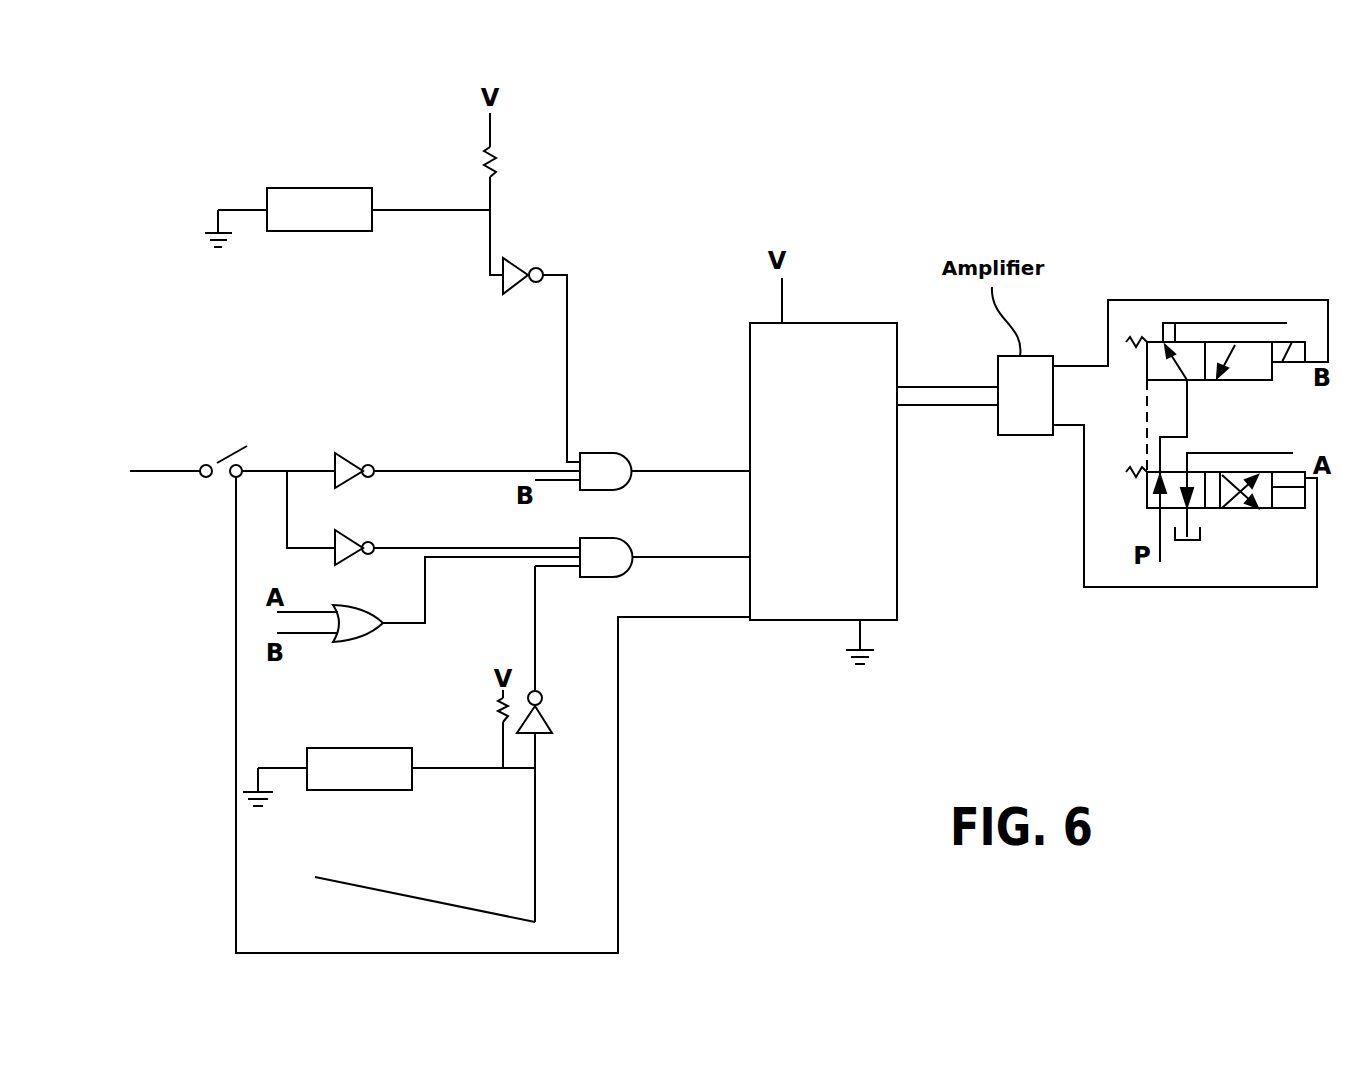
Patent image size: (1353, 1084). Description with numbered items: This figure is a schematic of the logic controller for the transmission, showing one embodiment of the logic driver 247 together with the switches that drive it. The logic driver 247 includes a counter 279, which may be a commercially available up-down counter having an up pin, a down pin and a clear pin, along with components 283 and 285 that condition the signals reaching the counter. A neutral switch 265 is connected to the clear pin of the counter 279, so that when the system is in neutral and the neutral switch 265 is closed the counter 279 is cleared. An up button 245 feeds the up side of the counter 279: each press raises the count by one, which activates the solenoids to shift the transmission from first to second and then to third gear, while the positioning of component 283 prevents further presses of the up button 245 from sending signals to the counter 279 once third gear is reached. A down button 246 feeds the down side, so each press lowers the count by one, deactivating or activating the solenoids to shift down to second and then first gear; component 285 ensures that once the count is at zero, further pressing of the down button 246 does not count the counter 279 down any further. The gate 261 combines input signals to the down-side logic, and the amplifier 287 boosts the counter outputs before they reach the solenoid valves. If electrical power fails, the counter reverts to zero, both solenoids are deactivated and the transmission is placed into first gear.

The up button 245 is at (310, 188).
The neutral switch 265 is at (200, 440).
The logic driver 247 is at (728, 303).
The component 283 is at (600, 453).
The component 285 is at (602, 577).
The OR gate 261 is at (365, 638).
The down button 246 is at (332, 882).
The amplifier 287 is at (998, 435).
The counter 279 is at (895, 610).